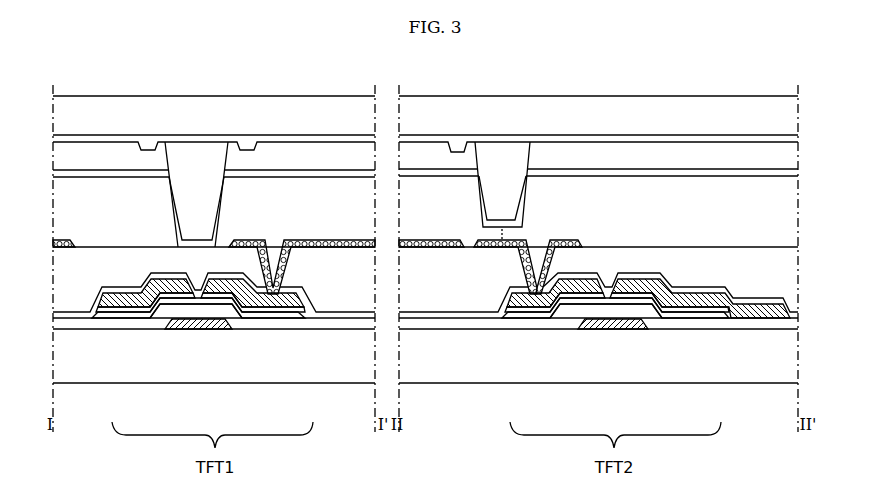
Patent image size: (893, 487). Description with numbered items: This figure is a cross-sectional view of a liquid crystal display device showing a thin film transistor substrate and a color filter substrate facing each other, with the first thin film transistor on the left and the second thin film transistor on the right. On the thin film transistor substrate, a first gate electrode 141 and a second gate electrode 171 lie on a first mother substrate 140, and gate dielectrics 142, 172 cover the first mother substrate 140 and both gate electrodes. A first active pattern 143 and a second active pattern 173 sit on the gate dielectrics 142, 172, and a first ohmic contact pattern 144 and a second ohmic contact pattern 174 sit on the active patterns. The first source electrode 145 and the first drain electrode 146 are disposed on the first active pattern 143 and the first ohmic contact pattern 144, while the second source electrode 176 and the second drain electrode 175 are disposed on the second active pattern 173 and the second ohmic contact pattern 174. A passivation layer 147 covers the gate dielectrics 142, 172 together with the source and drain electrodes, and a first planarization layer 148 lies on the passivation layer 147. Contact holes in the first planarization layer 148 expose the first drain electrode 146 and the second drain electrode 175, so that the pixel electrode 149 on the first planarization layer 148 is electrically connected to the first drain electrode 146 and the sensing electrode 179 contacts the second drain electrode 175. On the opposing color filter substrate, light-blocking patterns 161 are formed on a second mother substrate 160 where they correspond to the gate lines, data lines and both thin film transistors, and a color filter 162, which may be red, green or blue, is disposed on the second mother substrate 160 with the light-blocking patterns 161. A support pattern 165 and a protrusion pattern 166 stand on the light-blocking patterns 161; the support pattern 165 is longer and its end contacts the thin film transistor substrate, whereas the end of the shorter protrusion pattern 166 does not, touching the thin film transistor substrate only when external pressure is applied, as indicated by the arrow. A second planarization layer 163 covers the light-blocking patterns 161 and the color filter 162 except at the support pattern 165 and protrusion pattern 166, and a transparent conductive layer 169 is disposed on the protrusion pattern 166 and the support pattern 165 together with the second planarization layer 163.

The first mother substrate 140 is at (82, 378).
The first gate electrode 141 is at (197, 330).
The gate dielectric 142 is at (236, 308).
The first active pattern 143 is at (262, 313).
The first ohmic contact pattern 144 is at (147, 309).
The first source electrode 145 is at (114, 300).
The first drain electrode 146 is at (290, 300).
The passivation layer 147 is at (342, 319).
The first planarization layer 148 is at (330, 300).
The pixel electrode 149 is at (66, 239).
The second mother substrate 160 is at (89, 102).
The light-blocking pattern 161 is at (183, 137).
The color filter 162 is at (340, 140).
The second planarization layer 163 is at (127, 150).
The support pattern 165 is at (213, 150).
The protrusion pattern 166 is at (503, 150).
The transparent conductive layer 169 is at (281, 172).
The second gate electrode 171 is at (618, 330).
The gate dielectric 172 is at (657, 310).
The second active pattern 173 is at (587, 313).
The second ohmic contact pattern 174 is at (540, 300).
The second drain electrode 175 is at (515, 309).
The second source electrode 176 is at (695, 300).
The sensing electrode 179 is at (568, 239).